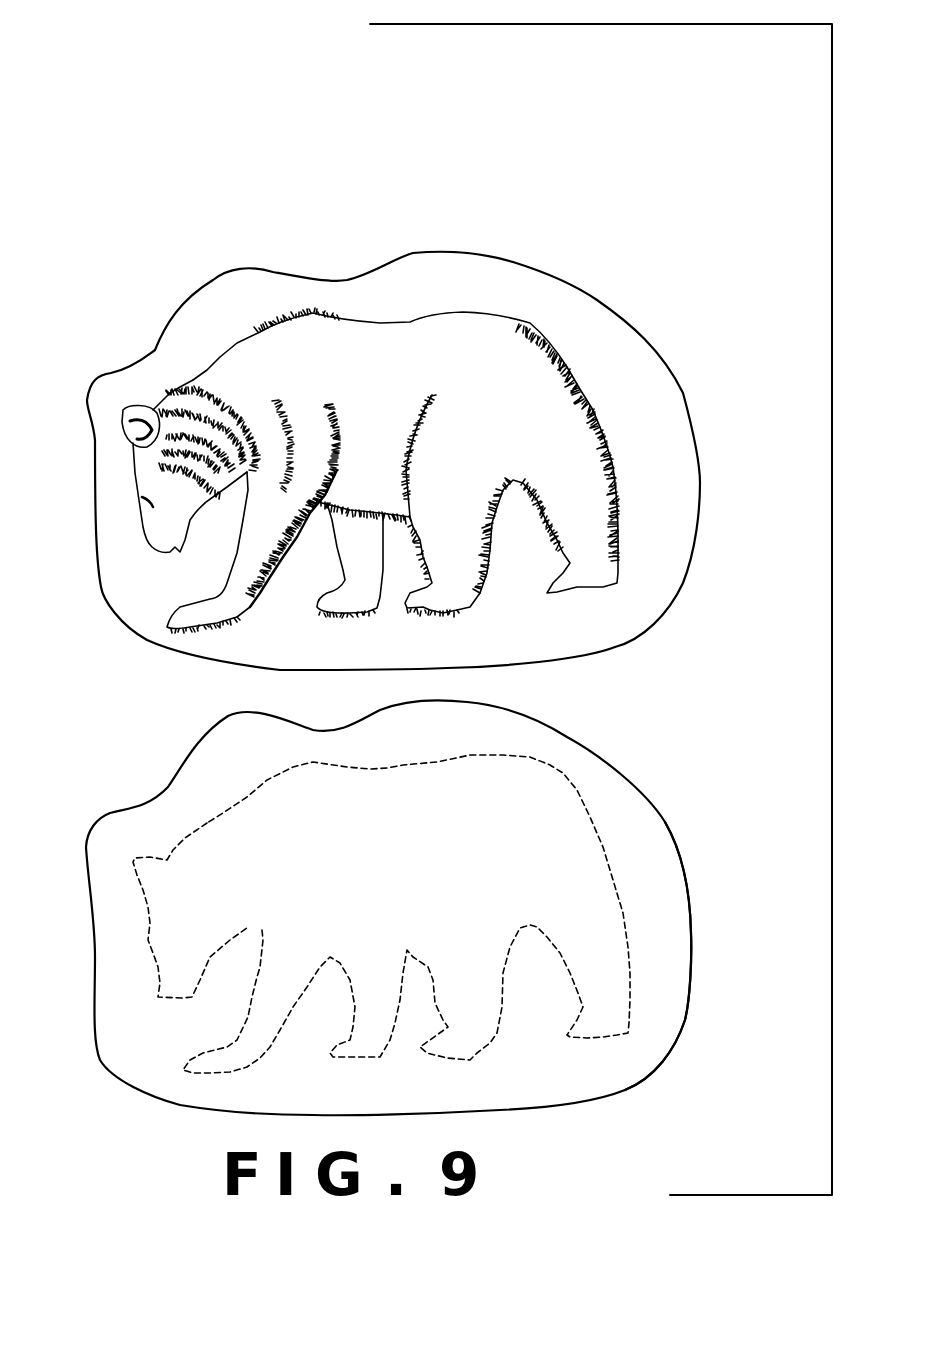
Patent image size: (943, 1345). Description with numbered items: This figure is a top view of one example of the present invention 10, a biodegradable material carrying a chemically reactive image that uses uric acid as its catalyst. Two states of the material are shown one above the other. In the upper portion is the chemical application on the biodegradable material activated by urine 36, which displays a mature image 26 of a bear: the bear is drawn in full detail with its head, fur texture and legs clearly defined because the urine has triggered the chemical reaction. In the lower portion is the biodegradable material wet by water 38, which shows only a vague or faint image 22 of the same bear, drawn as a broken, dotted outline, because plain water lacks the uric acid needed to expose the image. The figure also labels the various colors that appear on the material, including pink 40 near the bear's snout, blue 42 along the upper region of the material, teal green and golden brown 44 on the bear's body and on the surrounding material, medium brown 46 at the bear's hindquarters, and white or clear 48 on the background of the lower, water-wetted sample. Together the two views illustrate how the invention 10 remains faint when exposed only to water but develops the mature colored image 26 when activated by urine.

The present invention 10 is at (663, 182).
The vague or faint image 22 is at (227, 810).
The mature image 26 is at (600, 490).
The chemical application on the biodegradable material activated by urine 36 is at (608, 340).
The biodegradable material wet by water 38 is at (588, 770).
The pink 40 is at (150, 546).
The blue 42 is at (452, 293).
The teal green / golden brown 44 is at (373, 403).
The medium brown 46 is at (417, 470).
The white or clear 48 is at (653, 905).